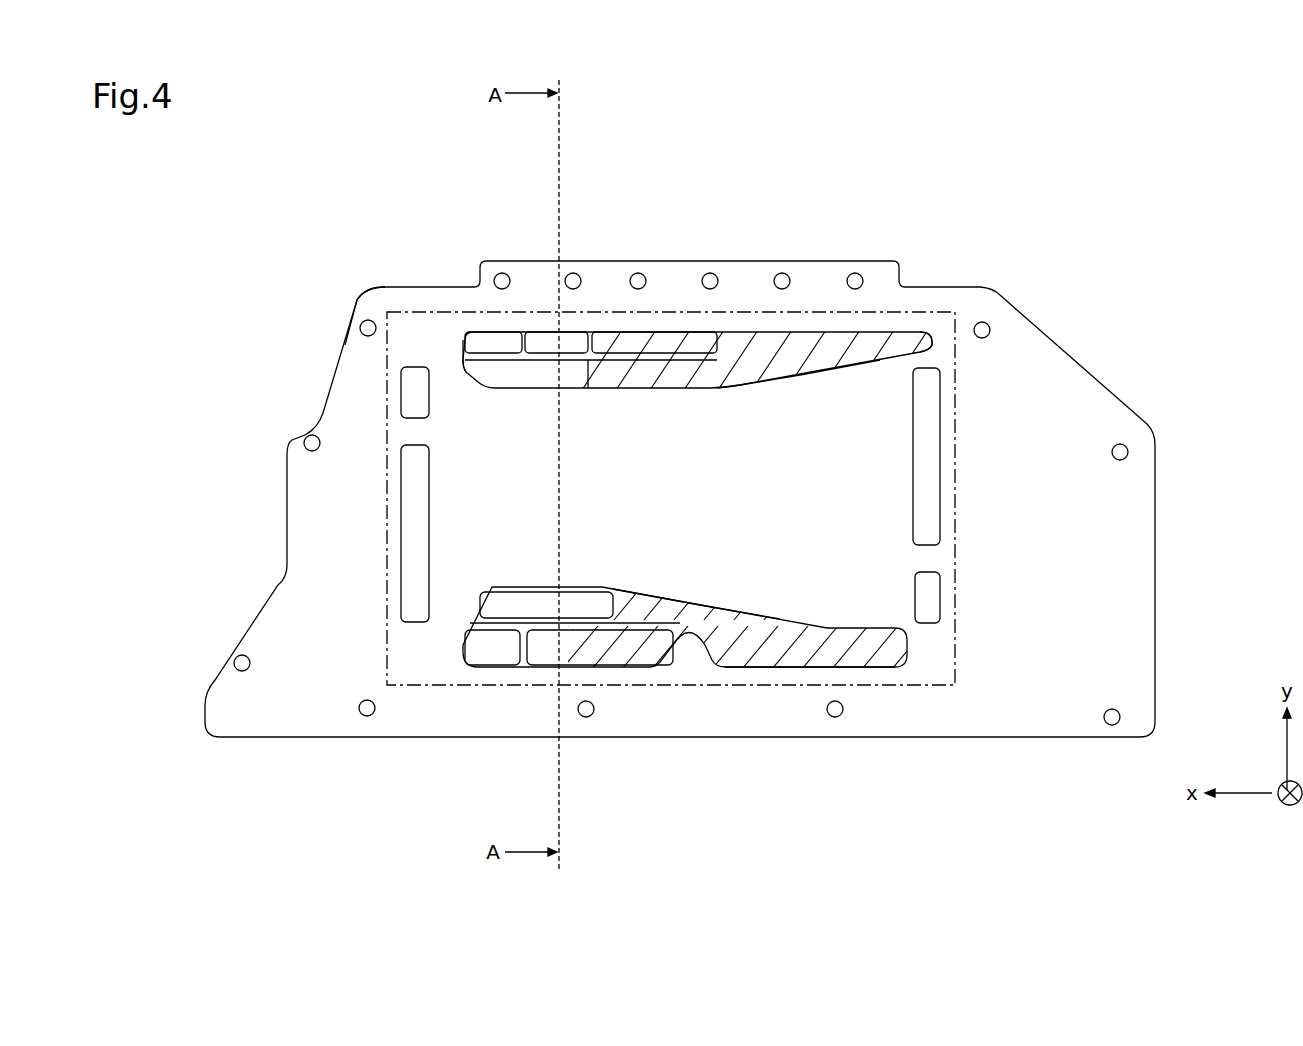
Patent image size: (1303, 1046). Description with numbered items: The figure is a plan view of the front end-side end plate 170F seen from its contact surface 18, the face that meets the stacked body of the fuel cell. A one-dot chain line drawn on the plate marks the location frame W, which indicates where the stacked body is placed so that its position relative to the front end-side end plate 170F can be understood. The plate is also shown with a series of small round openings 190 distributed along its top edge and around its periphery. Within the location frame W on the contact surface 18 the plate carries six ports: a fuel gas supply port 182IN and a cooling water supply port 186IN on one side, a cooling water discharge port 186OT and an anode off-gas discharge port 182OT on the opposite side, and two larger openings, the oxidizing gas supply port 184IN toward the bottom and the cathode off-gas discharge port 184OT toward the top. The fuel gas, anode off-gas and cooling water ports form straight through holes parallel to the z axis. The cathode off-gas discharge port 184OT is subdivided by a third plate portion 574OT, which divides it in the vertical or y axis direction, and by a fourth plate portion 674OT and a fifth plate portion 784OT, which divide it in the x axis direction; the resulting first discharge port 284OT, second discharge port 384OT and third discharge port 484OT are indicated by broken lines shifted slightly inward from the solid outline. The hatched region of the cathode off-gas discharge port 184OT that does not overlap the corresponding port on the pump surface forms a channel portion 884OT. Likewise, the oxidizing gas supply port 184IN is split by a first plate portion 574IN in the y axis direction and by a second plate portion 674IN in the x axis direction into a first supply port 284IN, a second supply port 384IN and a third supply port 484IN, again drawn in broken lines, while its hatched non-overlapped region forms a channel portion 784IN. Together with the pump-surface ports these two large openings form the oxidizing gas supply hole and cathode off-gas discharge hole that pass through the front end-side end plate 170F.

The front end-side end plate 170F is at (266, 202).
The contact surface 18 is at (375, 300).
The fastening holes 190 is at (855, 272).
The location frame W is at (942, 688).
The fuel gas supply port 182IN is at (405, 375).
The cooling water supply port 186IN is at (405, 578).
The cooling water discharge port 186OT is at (933, 397).
The anode off-gas discharge port 182OT is at (942, 597).
The cathode off-gas discharge port 184OT is at (721, 330).
The third plate portion 574OT is at (462, 355).
The fourth plate portion 674OT is at (517, 352).
The first discharge port 284OT is at (510, 368).
The second discharge port 384OT is at (653, 360).
The third discharge port 484OT is at (755, 373).
The fifth plate portion 784OT is at (887, 333).
The channel portion 884OT is at (942, 336).
The oxidizing gas supply port 184IN is at (670, 680).
The first plate portion 574IN is at (502, 625).
The second plate portion 674IN is at (508, 640).
The first supply port 284IN is at (523, 615).
The second supply port 384IN is at (655, 598).
The third supply port 484IN is at (737, 597).
The channel portion 784IN is at (773, 652).